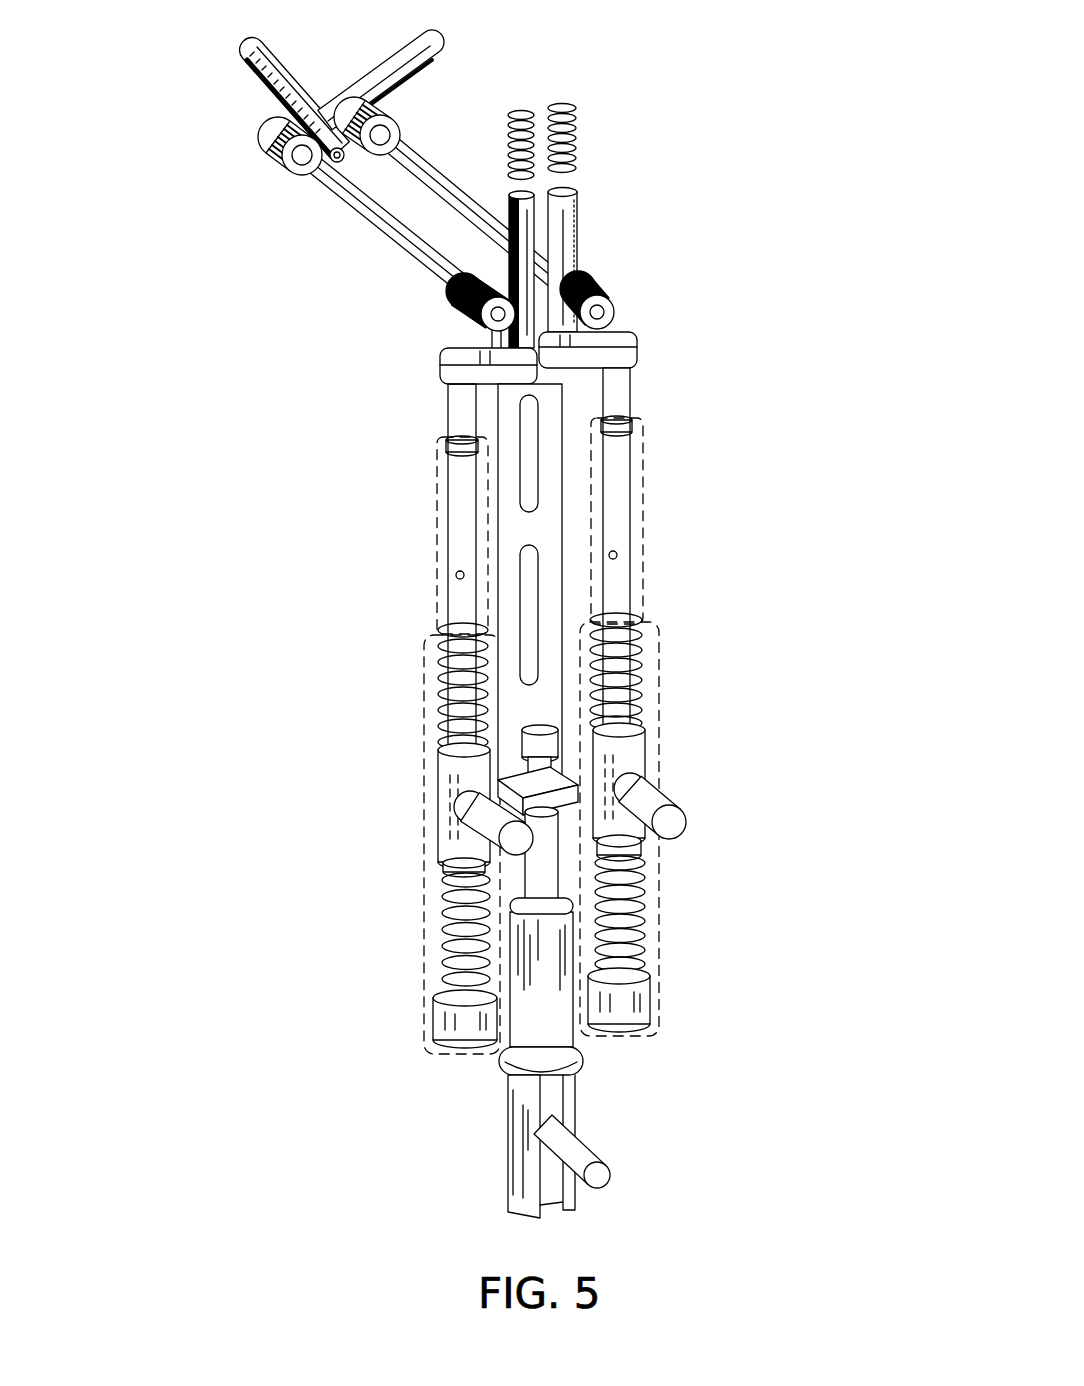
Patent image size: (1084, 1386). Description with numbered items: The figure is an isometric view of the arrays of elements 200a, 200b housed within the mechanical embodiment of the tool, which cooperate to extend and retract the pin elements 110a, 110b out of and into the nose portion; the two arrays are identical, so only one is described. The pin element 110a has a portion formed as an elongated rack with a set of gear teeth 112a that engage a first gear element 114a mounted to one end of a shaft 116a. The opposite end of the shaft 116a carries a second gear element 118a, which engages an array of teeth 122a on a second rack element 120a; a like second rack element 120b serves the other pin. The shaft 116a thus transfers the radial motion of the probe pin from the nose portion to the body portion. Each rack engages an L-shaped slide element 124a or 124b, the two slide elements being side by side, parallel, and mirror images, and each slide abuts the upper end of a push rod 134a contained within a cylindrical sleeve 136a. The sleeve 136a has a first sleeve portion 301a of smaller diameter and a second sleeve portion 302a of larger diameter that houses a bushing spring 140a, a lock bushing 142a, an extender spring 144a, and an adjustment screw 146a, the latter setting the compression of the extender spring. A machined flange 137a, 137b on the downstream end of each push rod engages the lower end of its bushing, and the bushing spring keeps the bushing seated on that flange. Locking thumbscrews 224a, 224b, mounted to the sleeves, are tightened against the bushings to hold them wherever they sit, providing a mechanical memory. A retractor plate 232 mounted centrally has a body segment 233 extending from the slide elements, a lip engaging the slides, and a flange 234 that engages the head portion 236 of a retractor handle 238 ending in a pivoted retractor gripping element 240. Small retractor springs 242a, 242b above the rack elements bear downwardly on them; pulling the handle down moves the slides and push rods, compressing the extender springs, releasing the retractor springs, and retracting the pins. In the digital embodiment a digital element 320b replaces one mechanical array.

The pin element 110a is at (259, 47).
The pin element 110b is at (430, 24).
The set of gear teeth 112a is at (262, 88).
The first gear element 114a is at (282, 168).
The shaft 116a is at (388, 243).
The second gear element 118a is at (480, 312).
The second rack element 120a is at (523, 213).
The second rack element 120b is at (578, 255).
The array of teeth 122a is at (503, 195).
The L-shaped slide element 124a is at (440, 370).
The slide element 124b is at (632, 355).
The push rod 134a is at (455, 492).
The cylindrical housing or sleeve 136a is at (445, 598).
The machined flange 137a is at (445, 872).
The machined flange 137b is at (641, 847).
The bushing spring 140a is at (445, 686).
The lock bushing 142a is at (455, 833).
The extender spring 144a is at (445, 925).
The adjustment screw 146a is at (445, 1025).
The array of elements 200a is at (213, 501).
The array of elements 200b is at (688, 418).
The locking thumbscrew 224a is at (548, 847).
The locking thumbscrew 224b is at (690, 824).
The retractor plate 232 is at (552, 680).
The body segment 233 is at (535, 528).
The flange 234 is at (573, 793).
The head portion 236 is at (545, 748).
The retractor handle 238 is at (560, 980).
The retractor gripping element 240 is at (577, 1156).
The retractor spring 242a is at (520, 105).
The retractor spring 242b is at (572, 106).
The first sleeve portion 301a is at (438, 545).
The second sleeve portion 302a is at (425, 768).
The digital element 320b is at (630, 910).